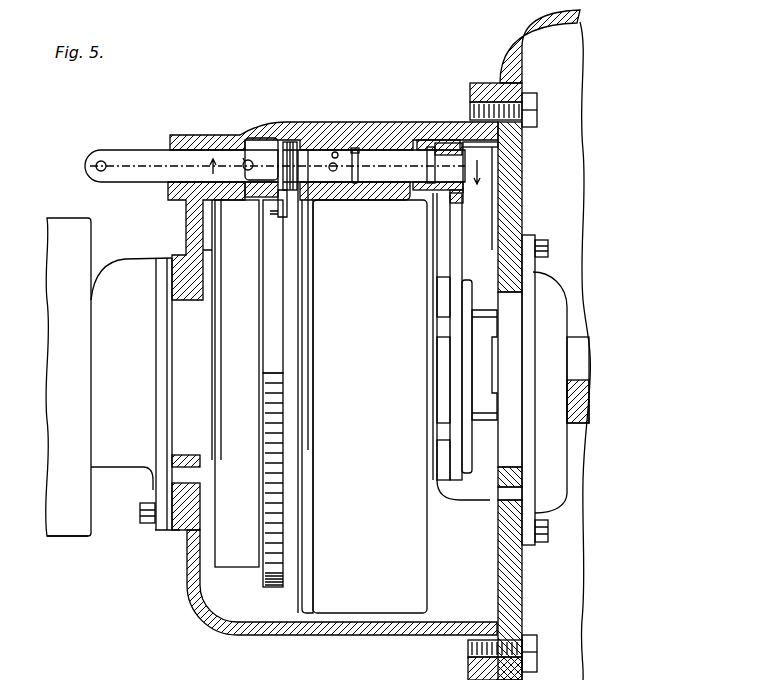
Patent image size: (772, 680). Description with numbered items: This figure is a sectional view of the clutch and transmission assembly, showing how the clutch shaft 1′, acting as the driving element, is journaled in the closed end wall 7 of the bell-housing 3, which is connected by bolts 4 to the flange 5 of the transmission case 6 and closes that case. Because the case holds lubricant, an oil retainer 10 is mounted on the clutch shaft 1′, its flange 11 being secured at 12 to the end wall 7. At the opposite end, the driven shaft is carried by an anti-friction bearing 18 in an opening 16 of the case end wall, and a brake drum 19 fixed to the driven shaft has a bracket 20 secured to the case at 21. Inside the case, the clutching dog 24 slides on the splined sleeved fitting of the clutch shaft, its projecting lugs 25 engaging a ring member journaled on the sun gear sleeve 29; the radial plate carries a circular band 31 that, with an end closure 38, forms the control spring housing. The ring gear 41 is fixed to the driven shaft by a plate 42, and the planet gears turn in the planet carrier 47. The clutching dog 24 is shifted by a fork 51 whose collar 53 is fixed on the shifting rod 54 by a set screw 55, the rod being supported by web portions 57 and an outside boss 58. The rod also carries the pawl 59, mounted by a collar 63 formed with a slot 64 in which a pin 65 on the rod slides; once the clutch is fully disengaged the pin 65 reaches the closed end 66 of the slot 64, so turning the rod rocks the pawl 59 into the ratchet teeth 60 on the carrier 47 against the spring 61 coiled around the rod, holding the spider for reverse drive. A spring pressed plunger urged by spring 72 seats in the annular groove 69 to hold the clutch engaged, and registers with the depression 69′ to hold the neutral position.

The clutch shaft 1′ is at (588, 362).
The bell-housing 3 is at (520, 42).
The bolts 4 is at (535, 110).
The flange 5 is at (490, 88).
The transmission case 6 is at (403, 130).
The end wall 7 is at (505, 200).
The oil retainer 10 is at (555, 448).
The flange 11 is at (525, 317).
The bolts 12 is at (548, 250).
The opening 16 is at (187, 300).
The anti-friction bearing 18 is at (185, 402).
The brake drum 19 is at (72, 530).
The bracket 20 is at (115, 363).
The bolts 21 is at (140, 517).
The clutching dog 24 is at (467, 406).
The projecting lugs 25 is at (440, 477).
The sun gear sleeve 29 is at (490, 348).
The circular band 31 is at (420, 538).
The end closure 38 is at (303, 578).
The ring gear 41 is at (240, 555).
The plate 42 is at (217, 537).
The planet carrier 47 is at (292, 350).
The fork 51 is at (455, 232).
The collar 53 is at (523, 147).
The shifting rod 54 is at (377, 160).
The set screw 55 is at (432, 148).
The web portions 57 is at (240, 203).
The boss 58 is at (170, 145).
The pawl 59 is at (275, 308).
The ratchet teeth 60 is at (273, 413).
The spring 61 is at (325, 133).
The collar 63 is at (265, 140).
The slot 64 is at (248, 160).
The pin 65 is at (243, 160).
The closed end 66 is at (290, 142).
The annular groove 69 is at (362, 150).
The depression 69′ is at (355, 183).
The spring 72 is at (365, 200).